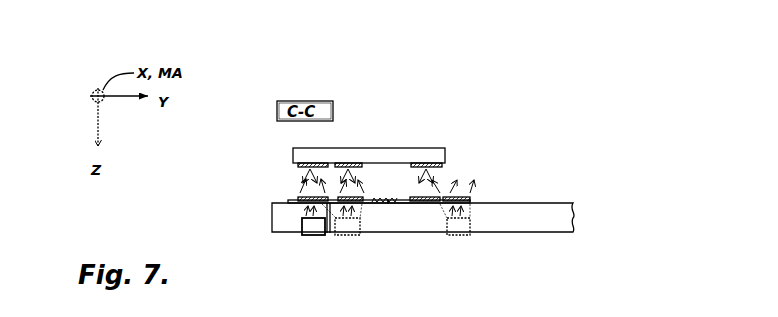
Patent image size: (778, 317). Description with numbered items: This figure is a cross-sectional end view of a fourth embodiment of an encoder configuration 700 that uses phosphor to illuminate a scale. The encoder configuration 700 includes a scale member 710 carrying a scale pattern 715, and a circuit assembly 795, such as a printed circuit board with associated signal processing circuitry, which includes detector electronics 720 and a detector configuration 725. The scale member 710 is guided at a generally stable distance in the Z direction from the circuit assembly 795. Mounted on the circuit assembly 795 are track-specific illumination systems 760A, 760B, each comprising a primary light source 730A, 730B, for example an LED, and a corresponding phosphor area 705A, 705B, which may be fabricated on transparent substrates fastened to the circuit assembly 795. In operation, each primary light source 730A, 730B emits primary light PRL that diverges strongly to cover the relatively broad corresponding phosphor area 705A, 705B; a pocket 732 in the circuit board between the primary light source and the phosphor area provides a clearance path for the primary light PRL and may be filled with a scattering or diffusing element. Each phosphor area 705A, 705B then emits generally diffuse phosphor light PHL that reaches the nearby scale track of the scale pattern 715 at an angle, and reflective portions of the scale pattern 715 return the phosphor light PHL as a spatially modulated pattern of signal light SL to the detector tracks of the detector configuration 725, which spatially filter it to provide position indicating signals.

The encoder configuration 700 is at (238, 50).
The scale member 710 is at (446, 152).
The scale pattern 715 is at (448, 167).
The detector electronics 720 is at (398, 204).
The detector configuration 725 is at (398, 191).
The phosphor area 705A is at (468, 201).
The primary light source 730A is at (475, 227).
The track-specific illumination system 760A is at (672, 155).
The phosphor area 705B is at (288, 201).
The primary light source 730B is at (306, 219).
The track-specific illumination system 760B is at (150, 192).
The pocket 732 is at (329, 233).
The circuit assembly 795 is at (575, 221).
The primary light PRL is at (298, 210).
The phosphor light PHL is at (288, 190).
The signal light SL is at (297, 168).